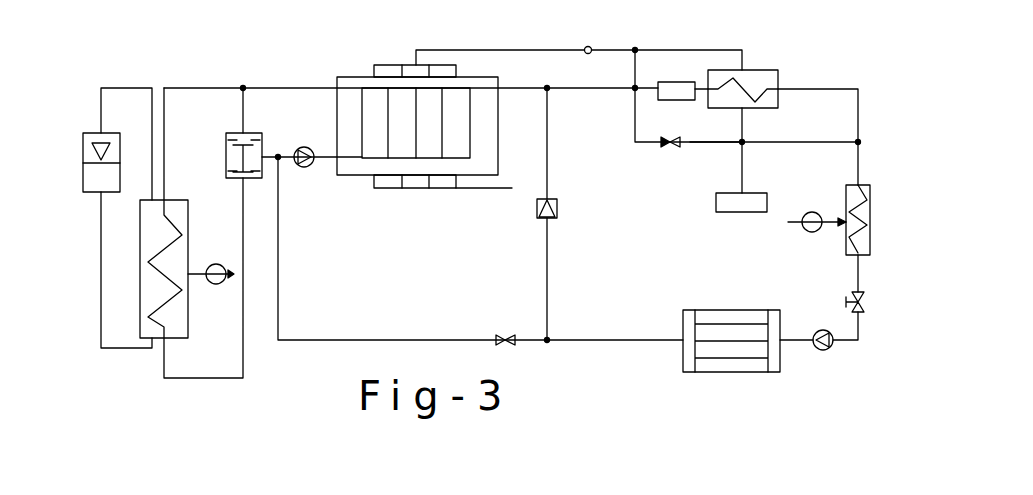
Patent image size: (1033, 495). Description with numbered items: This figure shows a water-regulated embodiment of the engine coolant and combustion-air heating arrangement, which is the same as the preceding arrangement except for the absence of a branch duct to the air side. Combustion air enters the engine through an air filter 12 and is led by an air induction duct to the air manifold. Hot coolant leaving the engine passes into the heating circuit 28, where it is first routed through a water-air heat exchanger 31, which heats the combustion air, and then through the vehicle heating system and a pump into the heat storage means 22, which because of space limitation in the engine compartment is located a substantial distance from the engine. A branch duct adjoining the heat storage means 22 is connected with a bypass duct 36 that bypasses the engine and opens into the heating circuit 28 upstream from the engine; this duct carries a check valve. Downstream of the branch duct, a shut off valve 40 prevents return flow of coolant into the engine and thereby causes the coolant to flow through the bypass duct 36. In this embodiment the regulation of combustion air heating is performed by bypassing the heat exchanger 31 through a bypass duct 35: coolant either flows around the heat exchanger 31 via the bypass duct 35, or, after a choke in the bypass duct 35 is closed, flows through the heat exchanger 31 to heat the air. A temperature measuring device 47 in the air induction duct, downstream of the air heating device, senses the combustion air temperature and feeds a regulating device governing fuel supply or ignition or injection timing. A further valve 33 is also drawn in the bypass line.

The air filter 12 is at (743, 203).
The heat storage means 22 is at (745, 310).
The heating circuit 28 is at (812, 89).
The water-air heat exchanger 31 is at (760, 72).
The check valve 33 is at (668, 146).
The bypass duct 35 is at (702, 143).
The bypass duct 36 is at (548, 252).
The shut off valve 40 is at (508, 338).
The temperature measuring device 47 is at (591, 47).